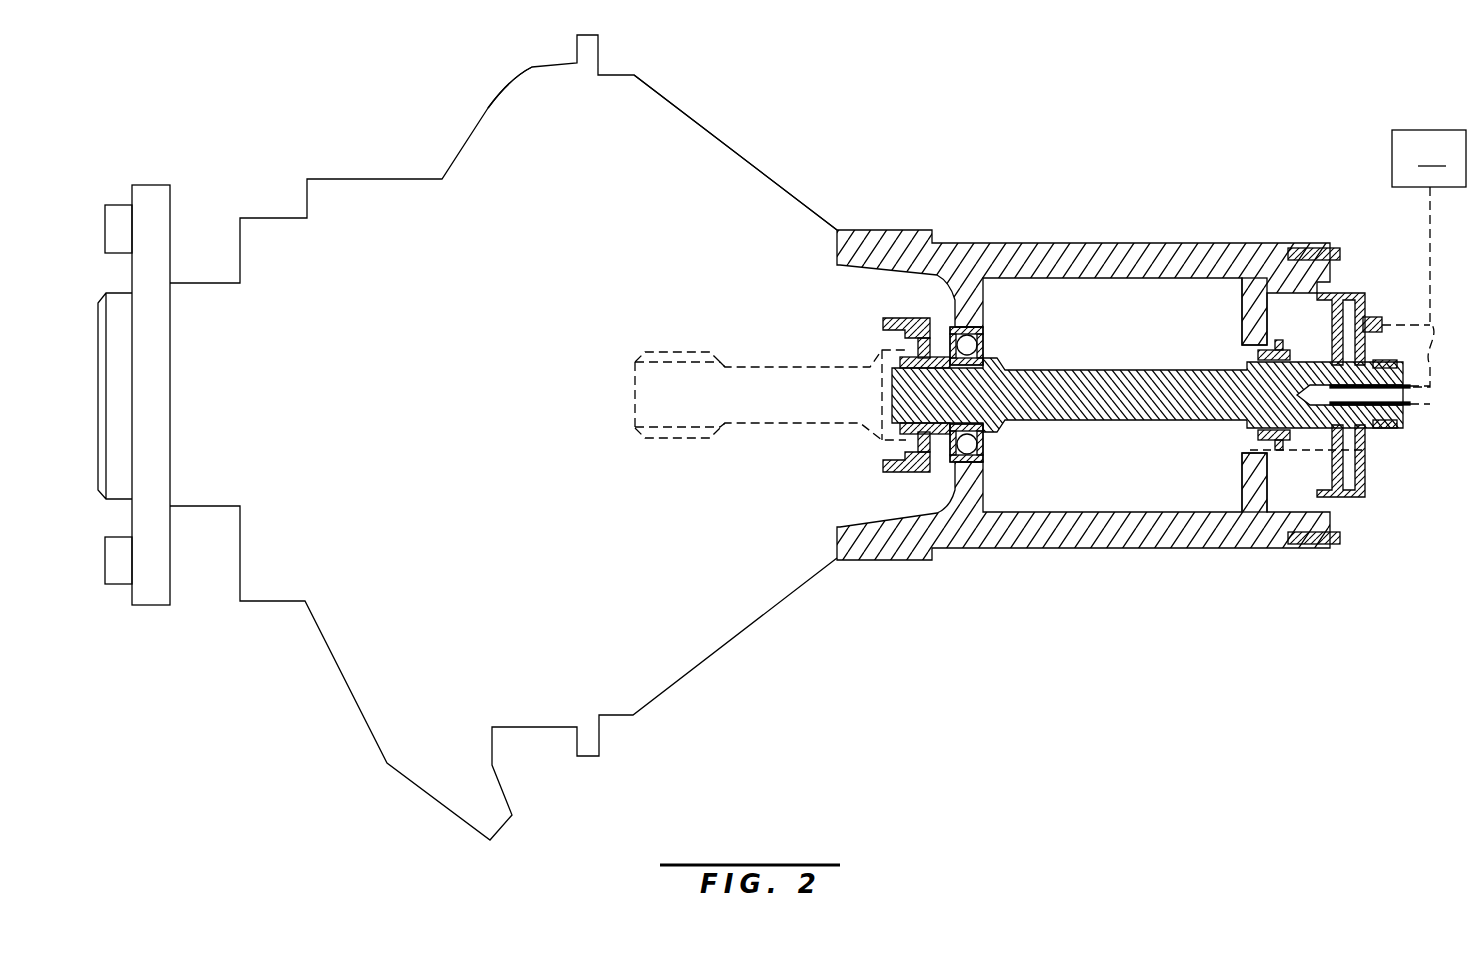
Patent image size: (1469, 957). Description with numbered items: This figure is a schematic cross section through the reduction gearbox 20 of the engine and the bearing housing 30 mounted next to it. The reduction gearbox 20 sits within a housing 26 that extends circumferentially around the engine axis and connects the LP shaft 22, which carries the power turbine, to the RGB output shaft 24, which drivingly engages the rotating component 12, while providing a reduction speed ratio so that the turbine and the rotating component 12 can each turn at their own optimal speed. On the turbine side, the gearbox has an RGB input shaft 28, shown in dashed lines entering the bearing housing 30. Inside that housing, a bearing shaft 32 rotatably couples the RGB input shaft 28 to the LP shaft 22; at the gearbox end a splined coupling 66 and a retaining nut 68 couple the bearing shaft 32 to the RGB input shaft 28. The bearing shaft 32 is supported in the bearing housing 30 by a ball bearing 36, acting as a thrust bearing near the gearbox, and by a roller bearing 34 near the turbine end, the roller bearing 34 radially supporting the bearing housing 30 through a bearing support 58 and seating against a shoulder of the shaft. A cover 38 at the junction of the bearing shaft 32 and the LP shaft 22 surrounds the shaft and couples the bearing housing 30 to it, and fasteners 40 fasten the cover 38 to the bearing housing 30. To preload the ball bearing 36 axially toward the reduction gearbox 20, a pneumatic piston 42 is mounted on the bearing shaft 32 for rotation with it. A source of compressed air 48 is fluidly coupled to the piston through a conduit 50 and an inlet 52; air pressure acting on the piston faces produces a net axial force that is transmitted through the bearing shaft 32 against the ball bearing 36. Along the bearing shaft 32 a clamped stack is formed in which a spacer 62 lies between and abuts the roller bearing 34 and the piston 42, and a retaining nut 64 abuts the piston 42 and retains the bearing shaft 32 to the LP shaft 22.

The rotating component 12 is at (150, 205).
The reduction gearbox 20 is at (762, 128).
The LP shaft 22 is at (1418, 393).
The RGB output shaft 24 is at (205, 298).
The housing 26 is at (685, 137).
The RGB input shaft 28 is at (857, 410).
The bearing housing 30 is at (900, 252).
The bearing shaft 32 is at (1075, 405).
The roller bearing 34 is at (1273, 452).
The ball bearing 36 is at (967, 456).
The cover 38 is at (1348, 293).
The fasteners 40 is at (1305, 247).
The piston 42 is at (1337, 505).
The source of compressed air 48 is at (1429, 158).
The conduit 50 is at (1415, 287).
The inlet 52 is at (1373, 317).
The bearing support 58 is at (1240, 312).
The spacer 62 is at (1297, 462).
The retaining nut 64 is at (1383, 430).
The splined coupling 66 is at (937, 272).
The retaining nut 68 is at (905, 472).